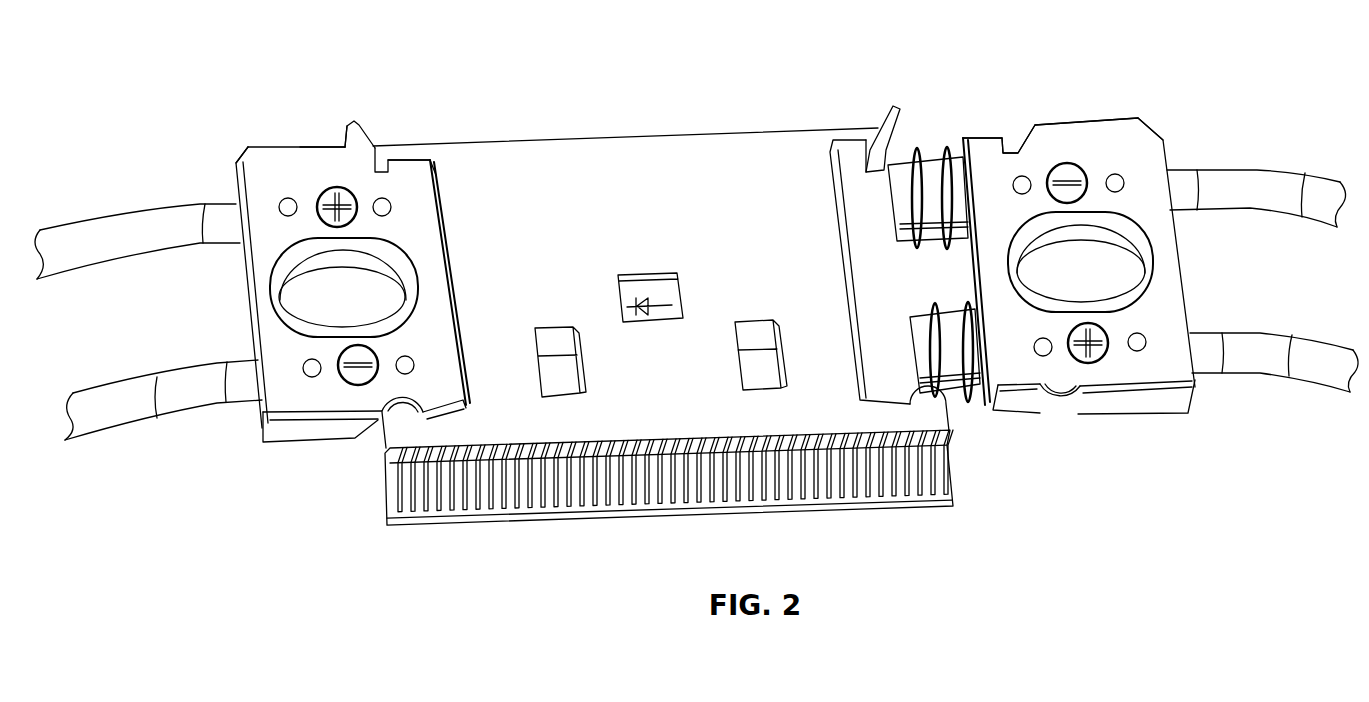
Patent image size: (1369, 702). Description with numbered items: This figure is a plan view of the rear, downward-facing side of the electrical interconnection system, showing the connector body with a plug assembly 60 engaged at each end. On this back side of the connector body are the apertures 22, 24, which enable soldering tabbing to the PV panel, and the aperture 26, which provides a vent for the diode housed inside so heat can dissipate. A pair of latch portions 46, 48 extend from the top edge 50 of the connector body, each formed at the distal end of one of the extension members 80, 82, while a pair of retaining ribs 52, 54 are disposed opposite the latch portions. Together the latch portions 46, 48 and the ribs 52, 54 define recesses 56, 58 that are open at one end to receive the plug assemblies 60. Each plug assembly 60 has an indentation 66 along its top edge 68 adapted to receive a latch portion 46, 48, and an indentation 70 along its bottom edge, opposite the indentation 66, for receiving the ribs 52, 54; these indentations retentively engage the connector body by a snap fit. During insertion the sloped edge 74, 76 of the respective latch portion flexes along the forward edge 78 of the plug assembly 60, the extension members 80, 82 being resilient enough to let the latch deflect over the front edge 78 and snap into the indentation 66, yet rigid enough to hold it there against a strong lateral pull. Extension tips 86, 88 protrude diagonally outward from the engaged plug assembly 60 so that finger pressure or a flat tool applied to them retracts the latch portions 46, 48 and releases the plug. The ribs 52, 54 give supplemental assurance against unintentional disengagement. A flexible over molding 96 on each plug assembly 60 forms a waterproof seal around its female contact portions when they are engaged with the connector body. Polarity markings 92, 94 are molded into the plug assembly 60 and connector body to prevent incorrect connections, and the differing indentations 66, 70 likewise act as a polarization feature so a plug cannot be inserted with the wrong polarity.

The aperture 22 is at (565, 372).
The aperture 24 is at (765, 365).
The aperture 26 is at (673, 293).
The latch portion 46 is at (878, 128).
The latch portion 48 is at (368, 133).
The top edge 50 is at (627, 132).
The retaining rib 52 is at (930, 428).
The retaining rib 54 is at (624, 498).
The recess 56 is at (920, 309).
The recess 58 is at (675, 471).
The plug assembly 60 is at (287, 152).
The indentation 66 is at (348, 130).
The top edge 68 is at (248, 147).
The indentation 70 is at (395, 398).
The sloped edge 74 is at (902, 117).
The sloped edge 76 is at (343, 143).
The forward edge 78 is at (453, 297).
The extension member 80 is at (997, 140).
The extension member 82 is at (420, 170).
The extension tip 86 is at (898, 108).
The extension tip 88 is at (355, 121).
The polarity marking 92 is at (352, 358).
The polarity marking 94 is at (282, 203).
The flexible over molding 96 is at (928, 167).